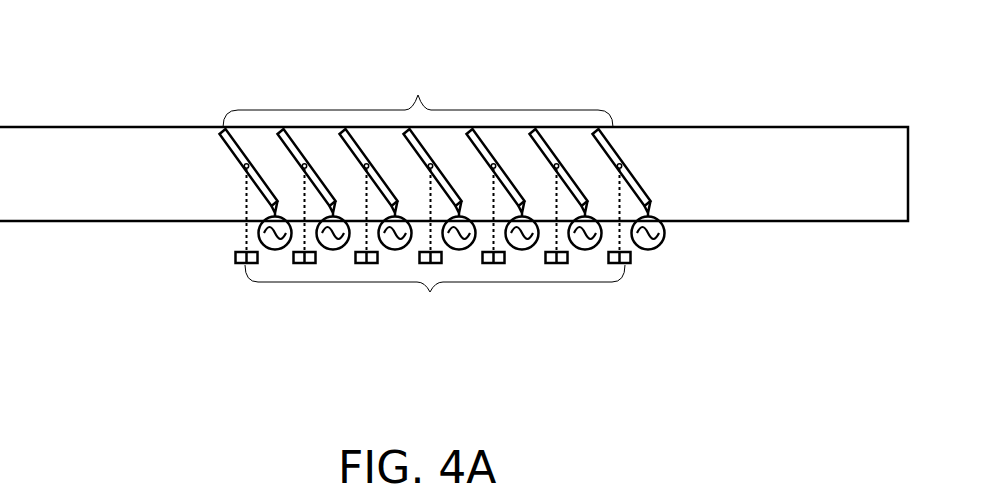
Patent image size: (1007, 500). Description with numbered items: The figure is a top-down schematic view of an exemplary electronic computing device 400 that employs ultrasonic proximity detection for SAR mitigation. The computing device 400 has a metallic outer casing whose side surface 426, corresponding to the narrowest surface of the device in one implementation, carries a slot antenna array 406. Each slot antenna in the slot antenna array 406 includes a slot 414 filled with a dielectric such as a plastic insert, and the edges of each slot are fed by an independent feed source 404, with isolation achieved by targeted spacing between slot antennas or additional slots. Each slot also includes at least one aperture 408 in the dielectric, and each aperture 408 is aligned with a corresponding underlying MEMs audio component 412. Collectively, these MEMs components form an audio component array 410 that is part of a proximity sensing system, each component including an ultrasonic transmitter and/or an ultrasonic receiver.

The electronic computing device 400 is at (124, 47).
The feed source 404 is at (272, 250).
The slot antenna array 406 is at (425, 87).
The aperture 408 is at (243, 168).
The audio component array 410 is at (437, 302).
The MEMs audio component 412 is at (236, 264).
The slot 414 is at (226, 145).
The side surface 426 is at (802, 181).